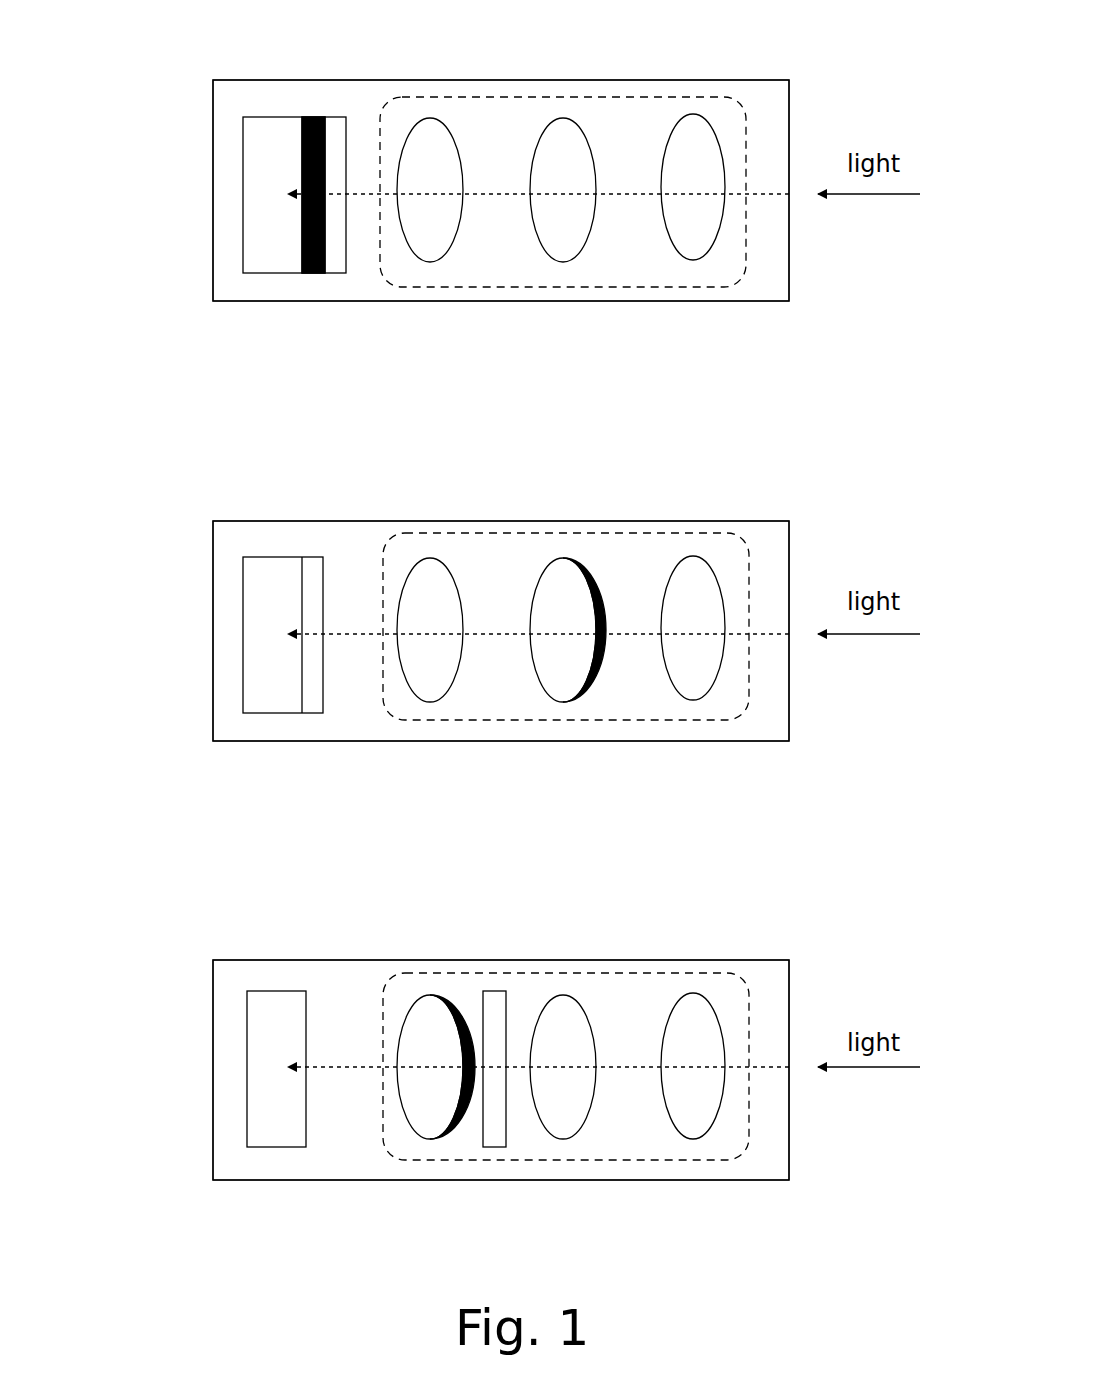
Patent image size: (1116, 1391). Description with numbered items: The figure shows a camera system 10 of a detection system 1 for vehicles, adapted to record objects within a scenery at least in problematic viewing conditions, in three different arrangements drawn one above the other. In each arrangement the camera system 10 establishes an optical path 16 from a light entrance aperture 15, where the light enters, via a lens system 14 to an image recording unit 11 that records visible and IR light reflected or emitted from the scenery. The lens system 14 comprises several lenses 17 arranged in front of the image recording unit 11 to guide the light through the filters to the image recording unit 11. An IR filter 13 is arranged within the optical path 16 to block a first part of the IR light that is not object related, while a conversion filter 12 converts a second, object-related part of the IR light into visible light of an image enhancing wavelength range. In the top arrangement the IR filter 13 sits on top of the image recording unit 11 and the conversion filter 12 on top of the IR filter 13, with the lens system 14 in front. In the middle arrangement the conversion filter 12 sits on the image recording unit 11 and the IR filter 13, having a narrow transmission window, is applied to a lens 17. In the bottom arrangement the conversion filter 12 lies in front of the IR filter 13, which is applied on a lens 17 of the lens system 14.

The detection system 1 is at (414, 611).
The camera system 10 is at (210, 97).
The image recording unit 11 is at (266, 252).
The conversion filter 12 is at (334, 111).
The IR filter 13 is at (314, 277).
The lens system 14 is at (728, 289).
The light entrance aperture 15 is at (790, 127).
The optical path 16 is at (622, 183).
The lens 17 is at (692, 148).